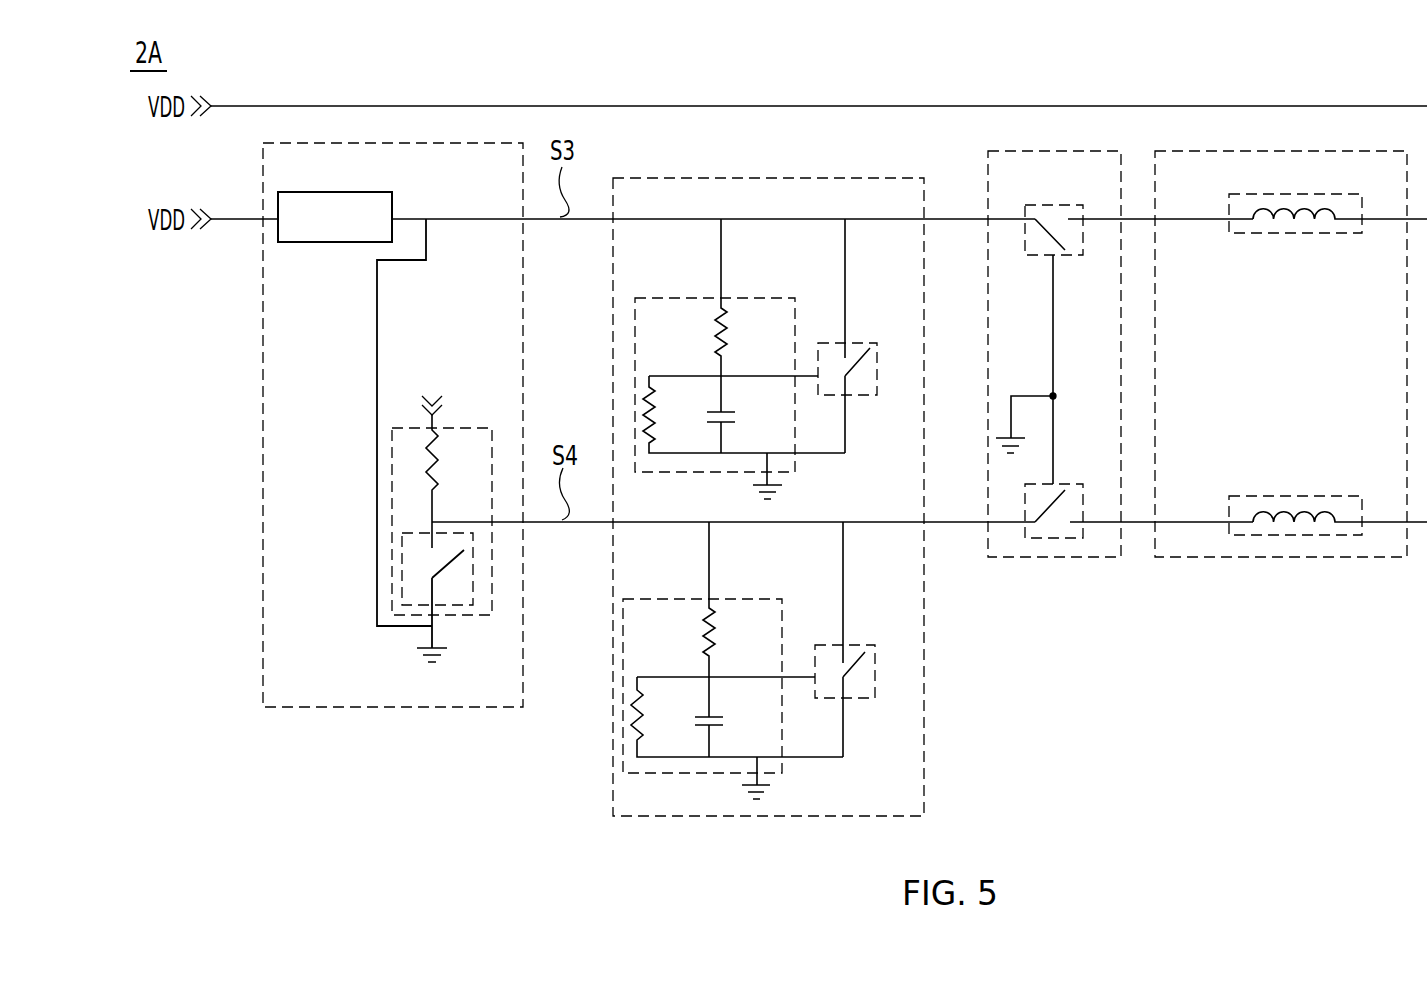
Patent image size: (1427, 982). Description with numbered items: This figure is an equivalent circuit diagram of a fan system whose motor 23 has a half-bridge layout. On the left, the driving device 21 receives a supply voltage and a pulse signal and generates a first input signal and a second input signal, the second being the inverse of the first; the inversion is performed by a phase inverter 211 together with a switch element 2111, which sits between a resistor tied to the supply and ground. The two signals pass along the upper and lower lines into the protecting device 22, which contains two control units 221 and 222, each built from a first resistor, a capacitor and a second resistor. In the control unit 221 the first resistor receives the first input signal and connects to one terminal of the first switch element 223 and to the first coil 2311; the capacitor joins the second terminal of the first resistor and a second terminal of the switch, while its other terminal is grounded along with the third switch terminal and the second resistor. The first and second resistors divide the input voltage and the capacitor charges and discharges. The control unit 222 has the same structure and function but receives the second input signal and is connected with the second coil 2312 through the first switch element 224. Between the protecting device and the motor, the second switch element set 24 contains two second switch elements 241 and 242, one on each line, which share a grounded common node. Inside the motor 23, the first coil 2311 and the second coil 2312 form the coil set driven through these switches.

The driving device 21 is at (293, 169).
The phase inverter 211 is at (473, 427).
The switch element 2111 is at (400, 597).
The protecting device 22 is at (690, 188).
The control unit 221 is at (645, 328).
The control unit 222 is at (633, 628).
The first switch element 223 is at (877, 366).
The first switch element 224 is at (877, 675).
The motor 23 is at (1242, 170).
The first coil 2311 is at (1333, 225).
The second coil 2312 is at (1310, 530).
The second switch element set 24 is at (1103, 550).
The second switch element 241 is at (1055, 210).
The second switch element 242 is at (1058, 532).